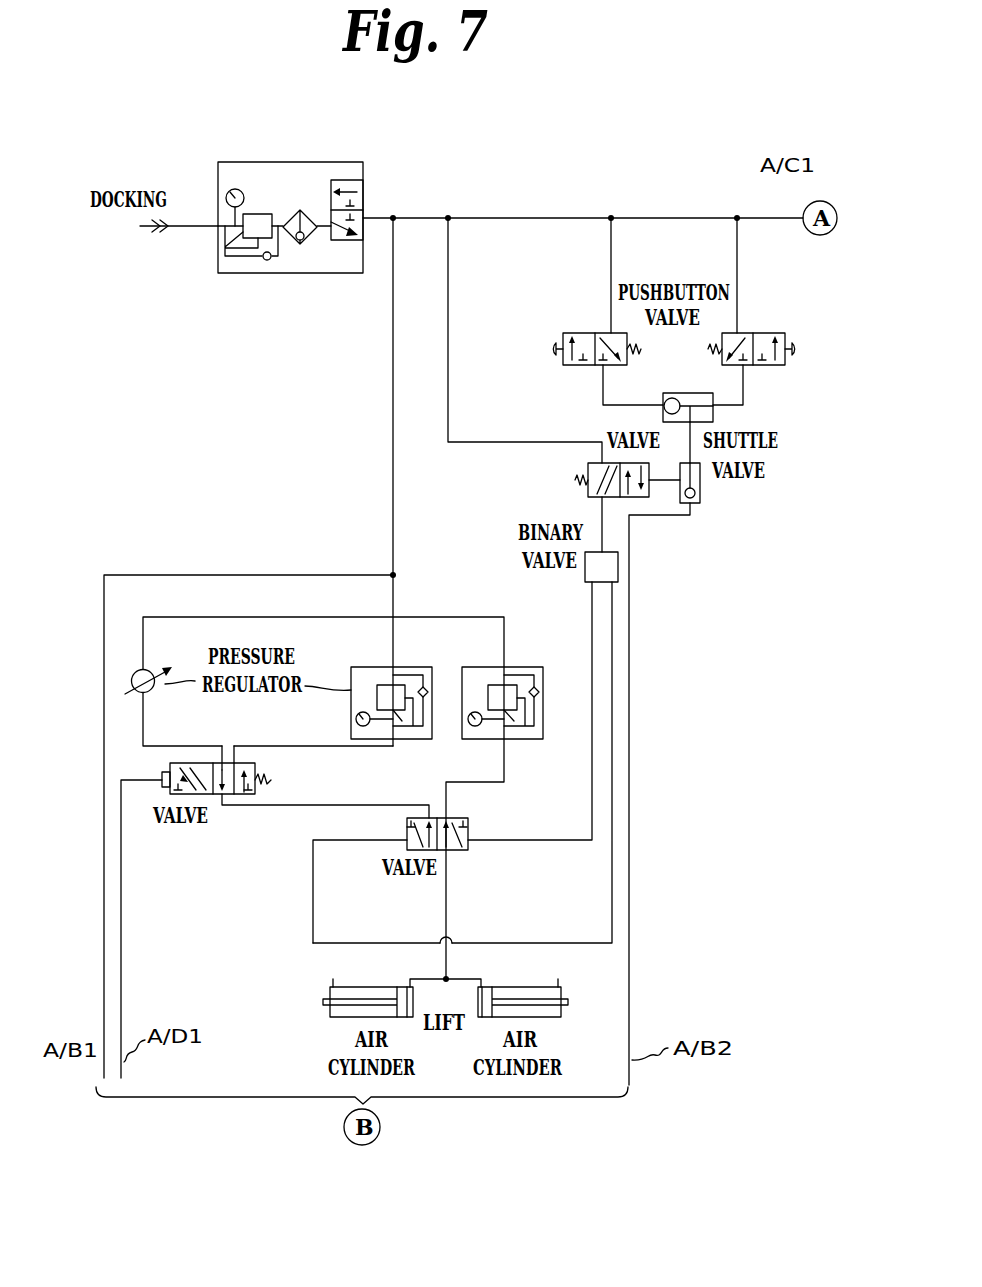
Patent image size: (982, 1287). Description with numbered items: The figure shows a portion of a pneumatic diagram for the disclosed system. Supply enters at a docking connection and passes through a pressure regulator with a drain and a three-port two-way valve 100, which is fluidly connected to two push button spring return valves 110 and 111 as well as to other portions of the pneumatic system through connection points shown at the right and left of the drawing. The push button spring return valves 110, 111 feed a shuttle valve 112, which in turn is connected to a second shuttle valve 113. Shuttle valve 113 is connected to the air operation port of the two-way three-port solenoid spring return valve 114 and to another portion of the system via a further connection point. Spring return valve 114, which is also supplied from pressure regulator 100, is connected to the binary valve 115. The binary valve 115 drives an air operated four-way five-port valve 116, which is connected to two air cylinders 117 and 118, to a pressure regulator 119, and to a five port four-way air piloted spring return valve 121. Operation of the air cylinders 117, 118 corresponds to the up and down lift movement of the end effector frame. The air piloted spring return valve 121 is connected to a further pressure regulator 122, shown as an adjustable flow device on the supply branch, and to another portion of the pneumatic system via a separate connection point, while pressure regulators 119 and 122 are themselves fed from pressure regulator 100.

The pressure regulator with a drain and a three-port two-way valve 100 is at (320, 186).
The two-way three-port push button spring return valve 110 is at (580, 325).
The two-way three-port push button spring return valve 111 is at (754, 325).
The shuttle valve 112 is at (705, 402).
The shuttle valve 113 is at (692, 482).
The two-way three-port solenoid with spring return valve 114 is at (626, 489).
The binary valve 115 is at (610, 560).
The air operated four-way five-port valve 116 is at (462, 825).
The air cylinder 117 is at (369, 968).
The air cylinder 118 is at (515, 968).
The pressure regulator 119 is at (522, 659).
The five port four-way air piloted spring return valve 121 is at (214, 792).
The pressure regulator 122 is at (127, 664).